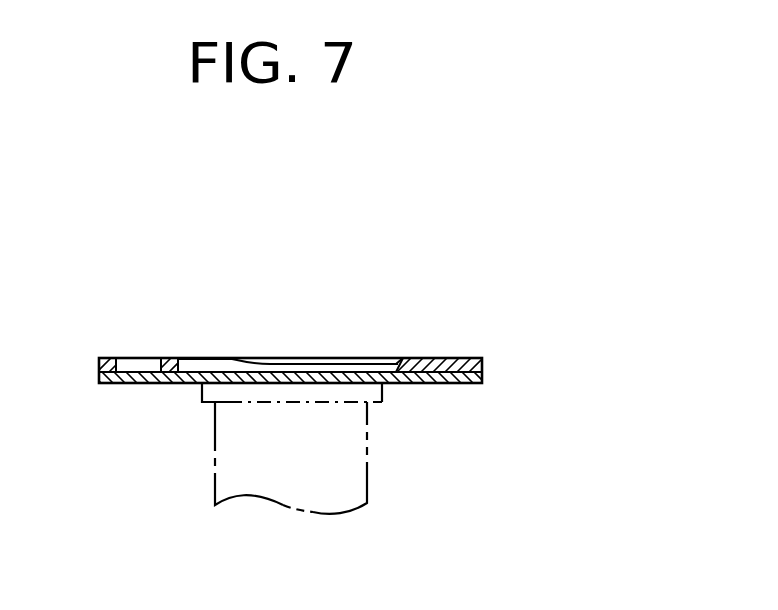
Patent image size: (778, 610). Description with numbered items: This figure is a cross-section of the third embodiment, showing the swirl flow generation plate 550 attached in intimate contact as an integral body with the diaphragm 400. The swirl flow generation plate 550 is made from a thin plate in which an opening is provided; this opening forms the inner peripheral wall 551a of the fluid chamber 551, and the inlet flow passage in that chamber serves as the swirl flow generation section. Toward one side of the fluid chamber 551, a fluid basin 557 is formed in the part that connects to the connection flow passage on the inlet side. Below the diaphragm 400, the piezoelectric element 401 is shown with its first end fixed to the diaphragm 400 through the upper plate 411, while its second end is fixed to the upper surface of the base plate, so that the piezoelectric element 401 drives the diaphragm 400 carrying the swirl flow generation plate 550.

The diaphragm 400 is at (462, 383).
The piezoelectric element 401 is at (368, 466).
The upper plate 411 is at (388, 394).
The swirl flow generation plate 550 is at (450, 358).
The fluid chamber 551 is at (323, 362).
The inner peripheral wall 551a is at (385, 366).
The fluid basin 557 is at (143, 366).